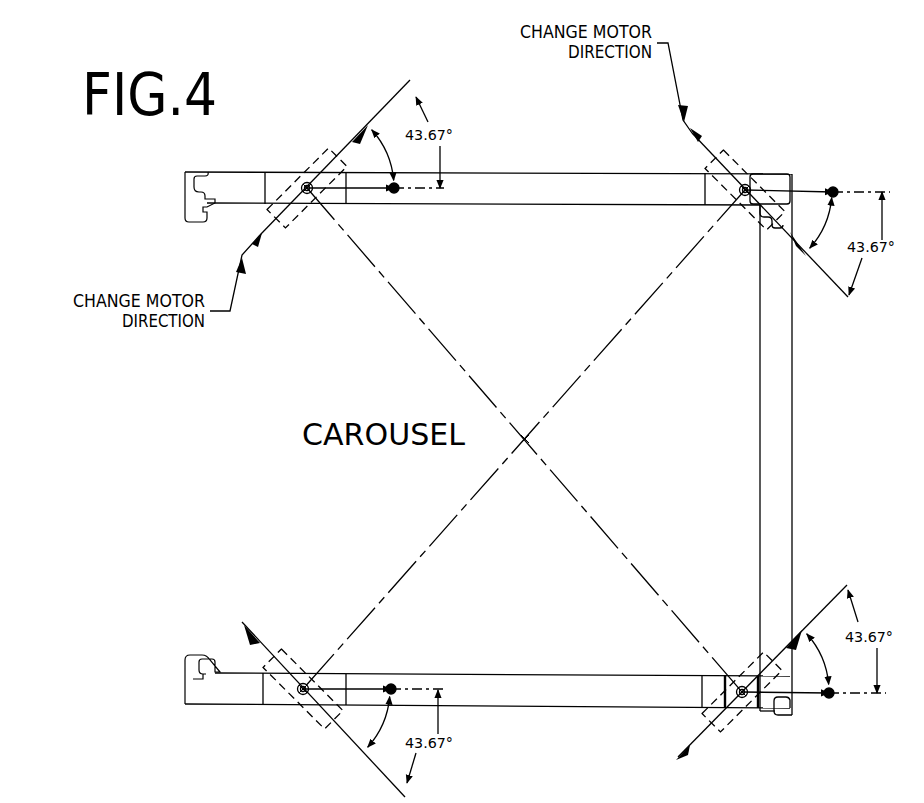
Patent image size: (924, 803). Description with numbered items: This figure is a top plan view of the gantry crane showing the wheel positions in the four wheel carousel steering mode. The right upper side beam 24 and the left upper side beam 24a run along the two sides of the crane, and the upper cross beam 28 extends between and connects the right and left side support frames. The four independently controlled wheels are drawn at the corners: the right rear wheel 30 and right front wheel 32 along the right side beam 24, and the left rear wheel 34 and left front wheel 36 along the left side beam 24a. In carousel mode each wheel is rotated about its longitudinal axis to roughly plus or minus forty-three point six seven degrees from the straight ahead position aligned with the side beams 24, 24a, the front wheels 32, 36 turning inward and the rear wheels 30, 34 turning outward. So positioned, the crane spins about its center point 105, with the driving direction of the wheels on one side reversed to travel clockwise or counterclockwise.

The left upper side beam 24a is at (523, 173).
The right upper side beam 24 is at (543, 675).
The upper cross beam 28 is at (766, 418).
The right rear wheel 30 is at (310, 721).
The right front wheel 32 is at (731, 724).
The left rear wheel 34 is at (312, 159).
The left front wheel 36 is at (732, 157).
The center point 105 is at (528, 440).